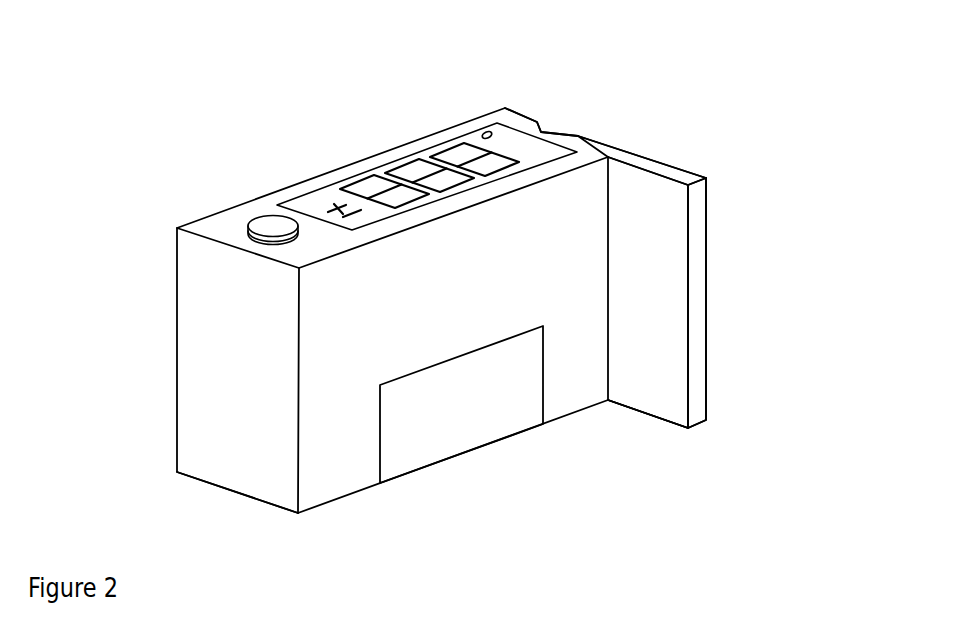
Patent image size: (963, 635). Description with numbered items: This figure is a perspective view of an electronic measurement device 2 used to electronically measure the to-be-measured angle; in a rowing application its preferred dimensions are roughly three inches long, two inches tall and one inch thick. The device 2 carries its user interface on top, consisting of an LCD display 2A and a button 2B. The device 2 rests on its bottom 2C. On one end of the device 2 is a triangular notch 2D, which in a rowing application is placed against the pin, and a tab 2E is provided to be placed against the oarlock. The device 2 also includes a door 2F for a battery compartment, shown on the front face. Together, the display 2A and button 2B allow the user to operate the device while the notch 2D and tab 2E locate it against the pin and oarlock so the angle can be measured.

The electronic measurement device 2 is at (790, 145).
The LCD display 2A is at (383, 175).
The button 2B is at (191, 279).
The bottom 2C is at (164, 503).
The triangular notch 2D is at (628, 106).
The tab 2E is at (703, 282).
The door 2F is at (494, 419).